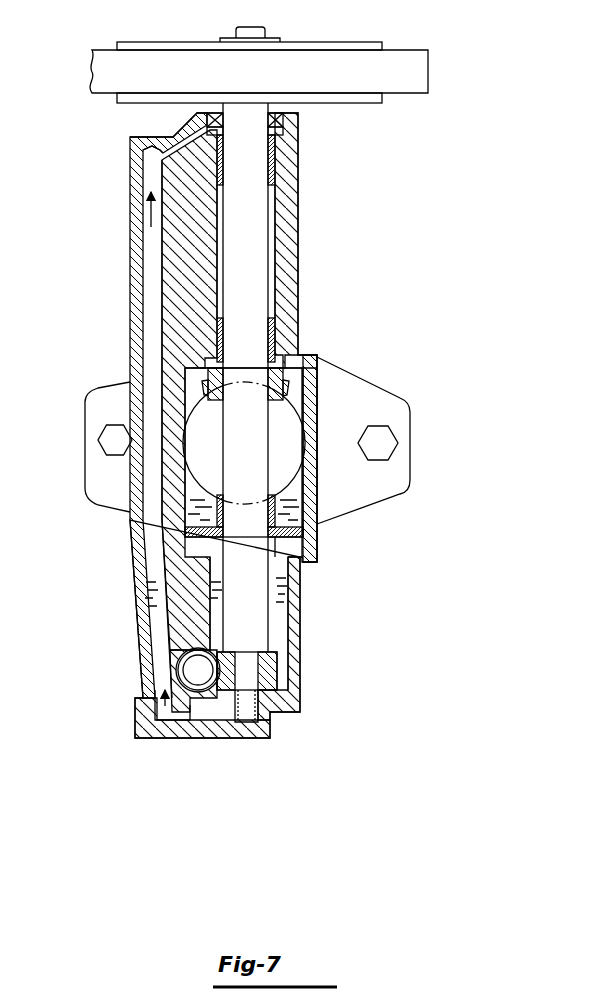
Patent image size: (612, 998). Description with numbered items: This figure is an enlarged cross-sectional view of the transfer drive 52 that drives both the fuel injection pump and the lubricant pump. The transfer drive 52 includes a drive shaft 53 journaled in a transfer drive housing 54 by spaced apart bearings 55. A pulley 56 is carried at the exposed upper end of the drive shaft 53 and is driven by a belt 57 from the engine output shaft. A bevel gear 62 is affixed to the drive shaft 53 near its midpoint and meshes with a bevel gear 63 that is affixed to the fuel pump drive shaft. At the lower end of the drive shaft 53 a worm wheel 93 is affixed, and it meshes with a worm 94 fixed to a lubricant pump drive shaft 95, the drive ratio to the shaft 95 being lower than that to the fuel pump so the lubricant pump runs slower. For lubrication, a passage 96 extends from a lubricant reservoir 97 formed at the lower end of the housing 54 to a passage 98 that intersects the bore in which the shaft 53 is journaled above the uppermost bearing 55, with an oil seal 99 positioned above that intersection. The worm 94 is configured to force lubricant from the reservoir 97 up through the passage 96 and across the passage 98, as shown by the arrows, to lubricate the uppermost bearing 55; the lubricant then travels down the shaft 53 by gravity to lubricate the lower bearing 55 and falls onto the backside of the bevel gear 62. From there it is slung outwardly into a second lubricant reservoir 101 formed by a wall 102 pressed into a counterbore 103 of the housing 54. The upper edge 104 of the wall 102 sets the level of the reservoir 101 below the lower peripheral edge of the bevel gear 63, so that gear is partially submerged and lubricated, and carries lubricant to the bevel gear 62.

The transfer drive 52 is at (306, 204).
The drive shaft 53 is at (265, 297).
The transfer drive housing 54 is at (290, 245).
The bearings 55 is at (297, 165).
The pulley 56 is at (372, 43).
The belt 57 is at (412, 73).
The bevel gear 62 is at (292, 390).
The bevel gear 63 is at (185, 385).
The worm wheel 93 is at (285, 662).
The worm 94 is at (178, 665).
The lubricant pump drive shaft 95 is at (195, 675).
The passage 96 is at (150, 252).
The lubricant reservoir 97 is at (277, 631).
The passage 98 is at (178, 135).
The oil seal 99 is at (300, 118).
The second lubricant reservoir 101 is at (318, 510).
The wall 102 is at (305, 567).
The counterbore 103 is at (300, 443).
The upper edge 104 is at (305, 540).